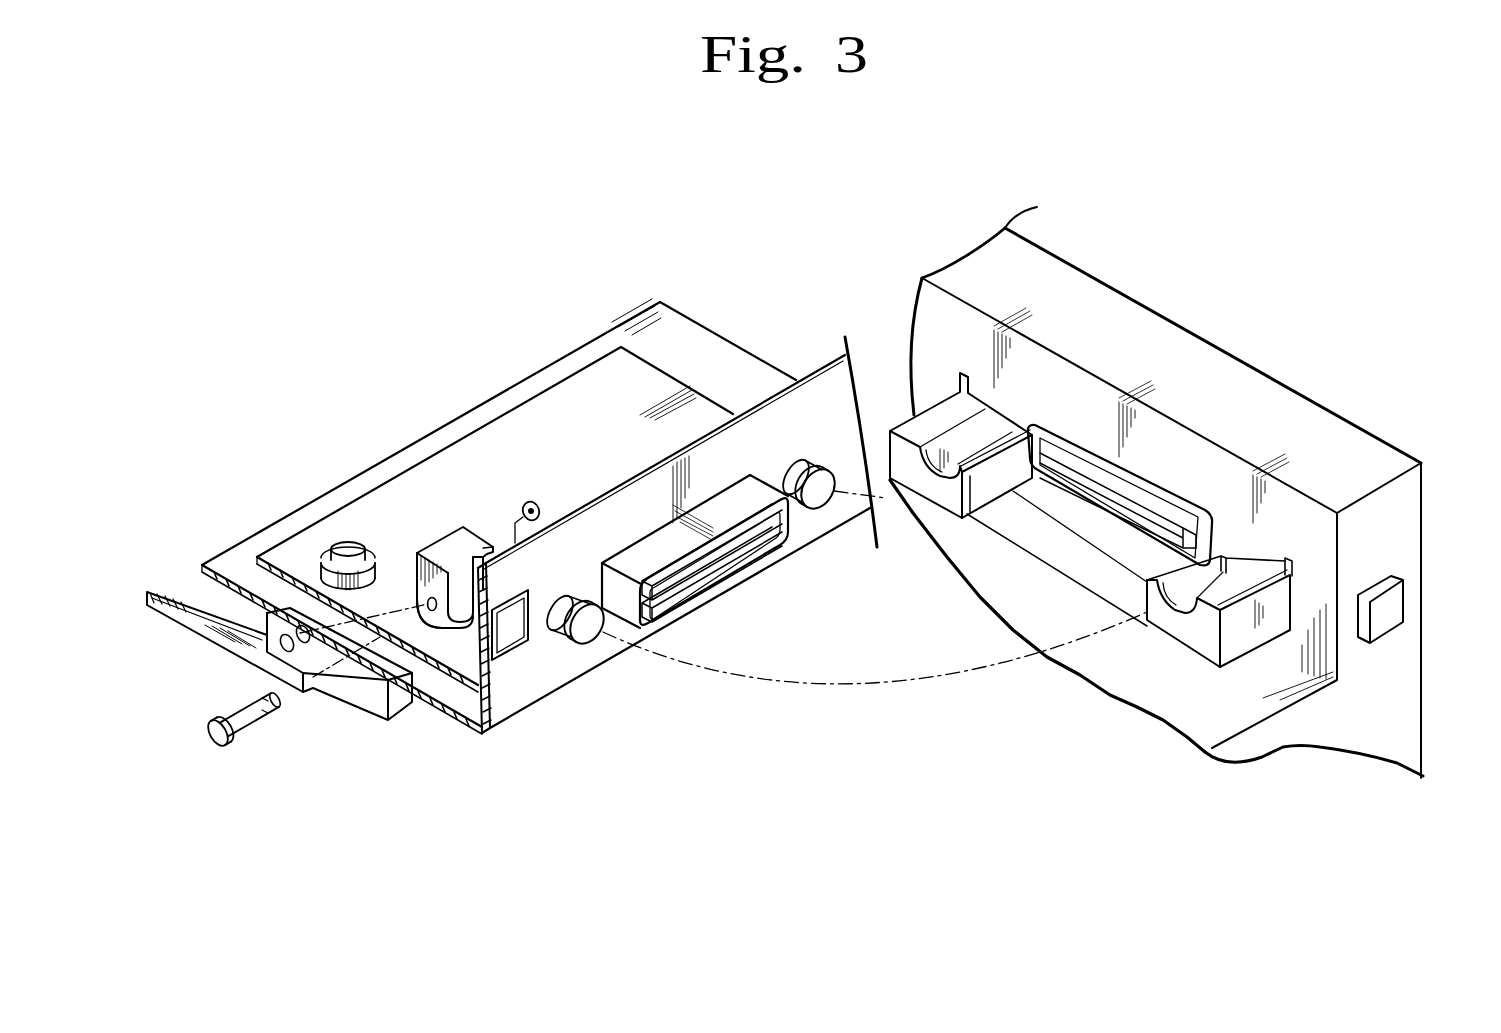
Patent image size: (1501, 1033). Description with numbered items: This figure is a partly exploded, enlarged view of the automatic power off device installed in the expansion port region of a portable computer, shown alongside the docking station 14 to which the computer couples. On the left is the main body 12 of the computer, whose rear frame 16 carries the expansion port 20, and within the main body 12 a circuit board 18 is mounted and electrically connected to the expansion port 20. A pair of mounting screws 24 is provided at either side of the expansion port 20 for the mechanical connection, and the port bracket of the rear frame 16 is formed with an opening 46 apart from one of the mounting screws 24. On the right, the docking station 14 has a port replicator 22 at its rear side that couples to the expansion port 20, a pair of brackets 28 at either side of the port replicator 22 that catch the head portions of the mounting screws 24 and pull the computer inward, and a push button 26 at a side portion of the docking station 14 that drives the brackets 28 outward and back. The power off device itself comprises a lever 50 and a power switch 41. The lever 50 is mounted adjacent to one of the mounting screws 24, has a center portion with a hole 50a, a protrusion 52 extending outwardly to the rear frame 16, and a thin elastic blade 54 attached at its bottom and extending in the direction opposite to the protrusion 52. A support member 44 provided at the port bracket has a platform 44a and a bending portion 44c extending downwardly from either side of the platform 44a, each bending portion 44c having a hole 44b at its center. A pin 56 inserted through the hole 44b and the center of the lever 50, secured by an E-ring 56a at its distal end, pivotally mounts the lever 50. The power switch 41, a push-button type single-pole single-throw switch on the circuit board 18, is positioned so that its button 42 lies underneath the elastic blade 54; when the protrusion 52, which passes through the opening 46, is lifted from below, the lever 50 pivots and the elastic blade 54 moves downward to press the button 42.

The main body 12 is at (705, 304).
The docking station 14 is at (1215, 321).
The rear frame 16 is at (533, 683).
The circuit board 18 is at (537, 405).
The expansion port 20 is at (713, 550).
The port replicator 22 is at (1130, 493).
The mounting screws 24 is at (590, 640).
The push button 26 is at (1398, 606).
The brackets 28 is at (1200, 633).
The power switch 41 is at (320, 573).
The button 42 is at (345, 548).
The support member 44 is at (432, 500).
The platform 44a is at (470, 540).
The hole 44b is at (432, 612).
The bending portion 44c is at (413, 582).
The opening 46 is at (513, 608).
The lever 50 is at (252, 683).
The hole 50a is at (282, 645).
The protrusion 52 is at (353, 686).
The elastic blade 54 is at (160, 590).
The pin 56 is at (247, 728).
The E-ring 56a is at (540, 509).